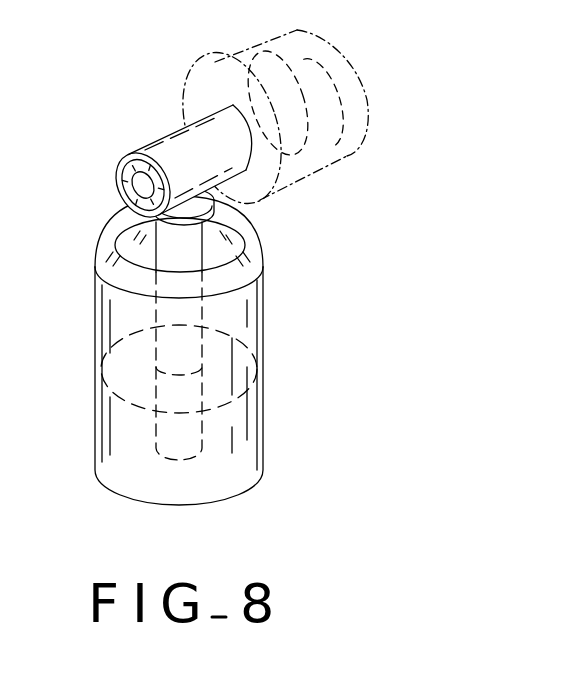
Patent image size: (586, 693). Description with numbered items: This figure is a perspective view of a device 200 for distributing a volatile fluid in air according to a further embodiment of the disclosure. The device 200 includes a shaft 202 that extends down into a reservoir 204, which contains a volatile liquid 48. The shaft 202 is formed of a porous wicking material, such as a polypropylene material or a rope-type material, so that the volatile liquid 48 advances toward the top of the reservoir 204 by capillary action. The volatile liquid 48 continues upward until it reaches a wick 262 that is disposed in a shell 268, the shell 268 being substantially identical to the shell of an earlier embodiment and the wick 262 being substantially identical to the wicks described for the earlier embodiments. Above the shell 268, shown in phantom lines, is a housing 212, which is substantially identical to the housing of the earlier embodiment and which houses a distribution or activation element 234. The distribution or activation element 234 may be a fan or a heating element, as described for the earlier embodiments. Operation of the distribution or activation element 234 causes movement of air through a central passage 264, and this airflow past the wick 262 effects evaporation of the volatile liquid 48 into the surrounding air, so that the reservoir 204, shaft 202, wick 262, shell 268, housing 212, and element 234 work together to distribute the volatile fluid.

The device 200 is at (400, 157).
The shaft 202 is at (203, 312).
The reservoir 204 is at (262, 443).
The housing 212 is at (238, 45).
The distribution or activation element 234 is at (356, 66).
The wick 262 is at (138, 186).
The central passage 264 is at (123, 202).
The shell 268 is at (158, 137).
The volatile liquid 48 is at (265, 413).